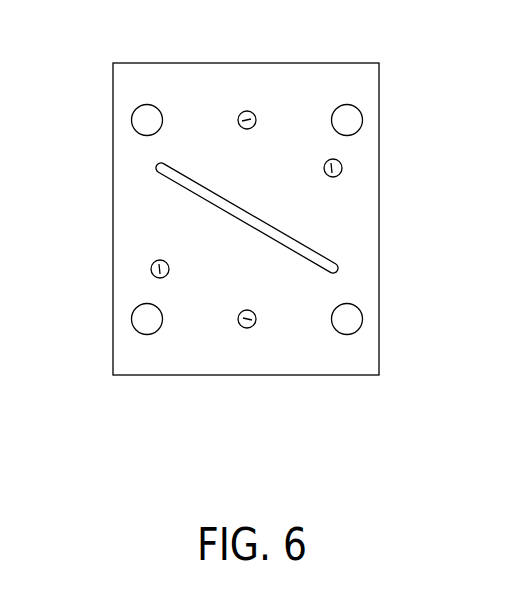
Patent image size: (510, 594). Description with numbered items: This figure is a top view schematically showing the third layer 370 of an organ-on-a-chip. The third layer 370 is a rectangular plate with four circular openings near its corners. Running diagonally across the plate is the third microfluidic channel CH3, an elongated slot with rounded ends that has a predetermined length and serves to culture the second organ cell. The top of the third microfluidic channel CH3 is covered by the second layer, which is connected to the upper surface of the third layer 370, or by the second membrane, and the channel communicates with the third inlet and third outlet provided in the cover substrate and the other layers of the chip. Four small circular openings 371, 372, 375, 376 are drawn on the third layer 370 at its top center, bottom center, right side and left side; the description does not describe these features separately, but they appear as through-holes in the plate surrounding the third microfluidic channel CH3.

The third layer 370 is at (328, 63).
The first hole 371 is at (244, 112).
The second hole 372 is at (247, 328).
The third hole 375 is at (342, 167).
The fourth hole 376 is at (151, 268).
The third microfluidic channel CH3 is at (188, 185).